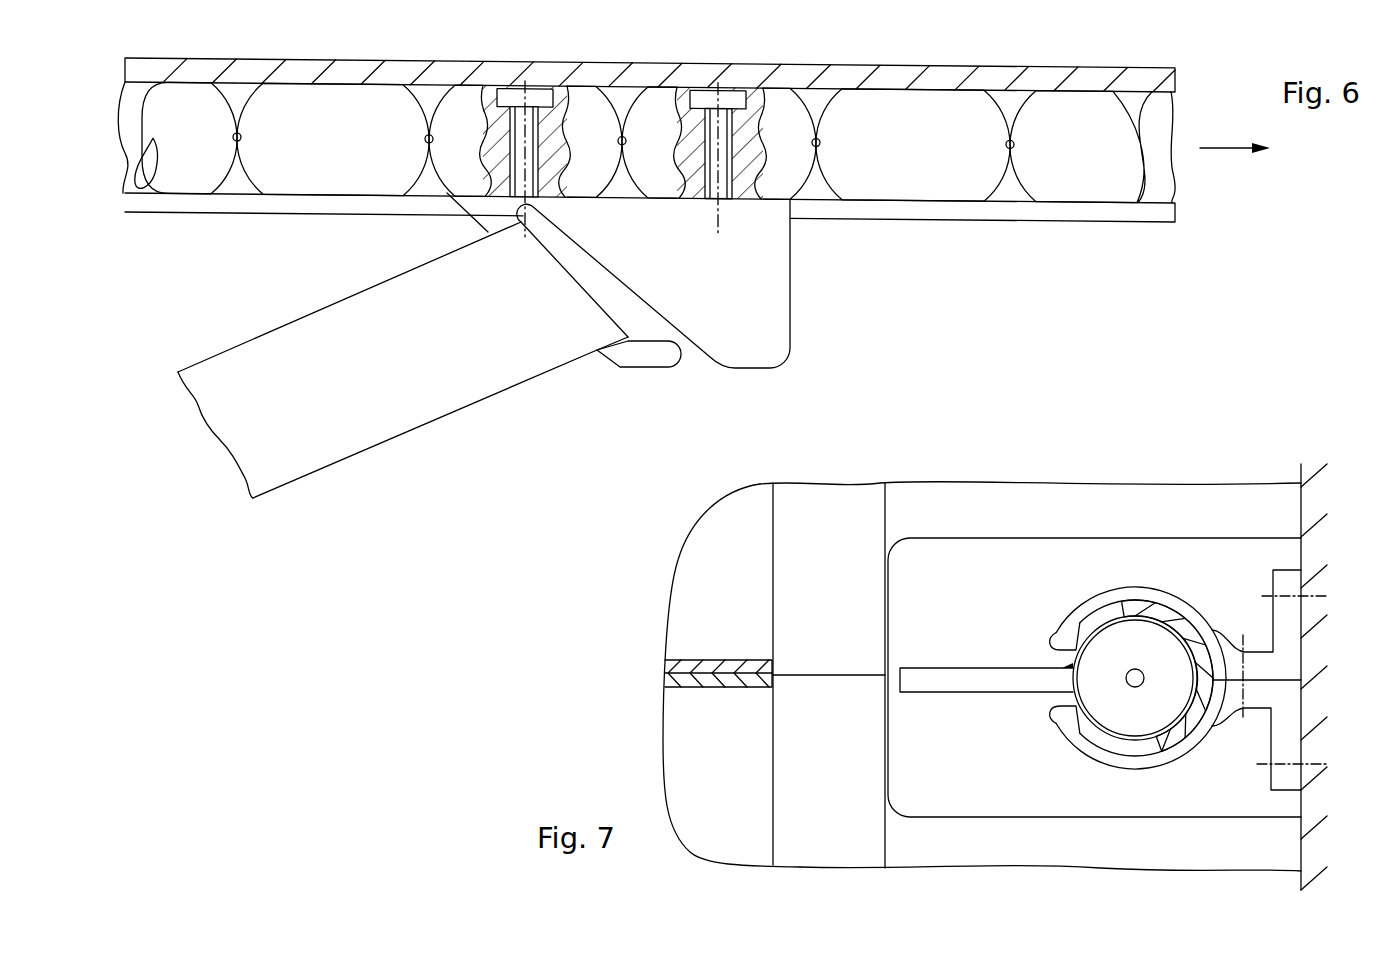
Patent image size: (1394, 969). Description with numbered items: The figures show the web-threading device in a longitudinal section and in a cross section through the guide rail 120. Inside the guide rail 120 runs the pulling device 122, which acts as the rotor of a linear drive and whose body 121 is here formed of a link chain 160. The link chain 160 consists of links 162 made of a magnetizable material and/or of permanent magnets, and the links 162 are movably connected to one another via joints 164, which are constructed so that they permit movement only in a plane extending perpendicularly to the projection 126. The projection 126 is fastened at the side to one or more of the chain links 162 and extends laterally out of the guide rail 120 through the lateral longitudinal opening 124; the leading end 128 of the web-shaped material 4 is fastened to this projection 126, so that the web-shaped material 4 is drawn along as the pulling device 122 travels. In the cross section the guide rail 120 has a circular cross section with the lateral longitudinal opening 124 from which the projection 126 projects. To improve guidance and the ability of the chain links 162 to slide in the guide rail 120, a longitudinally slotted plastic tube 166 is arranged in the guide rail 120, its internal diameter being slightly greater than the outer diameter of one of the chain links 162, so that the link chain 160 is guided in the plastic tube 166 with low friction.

In FIG. 6, the web-shaped material 4 is at (427, 397).
In FIG. 6, the guide rail 120 is at (817, 16).
In FIG. 7, the guide rail 120 is at (1147, 598).
In FIG. 6, the body 121 is at (650, 234).
In FIG. 6, the pulling device 122 is at (533, 52).
In FIG. 7, the pulling device 122 is at (1086, 715).
In FIG. 7, the longitudinal opening 124 is at (1058, 667).
In FIG. 6, the projection 126 is at (773, 323).
In FIG. 7, the projection 126 is at (962, 682).
In FIG. 6, the leading end 128 is at (580, 315).
In FIG. 6, the link chain 160 is at (975, 200).
In FIG. 6, the links 162 is at (742, 65).
In FIG. 7, the links 162 is at (1158, 699).
In FIG. 6, the joints 164 is at (300, 74).
In FIG. 7, the plastic tube 166 is at (1197, 650).